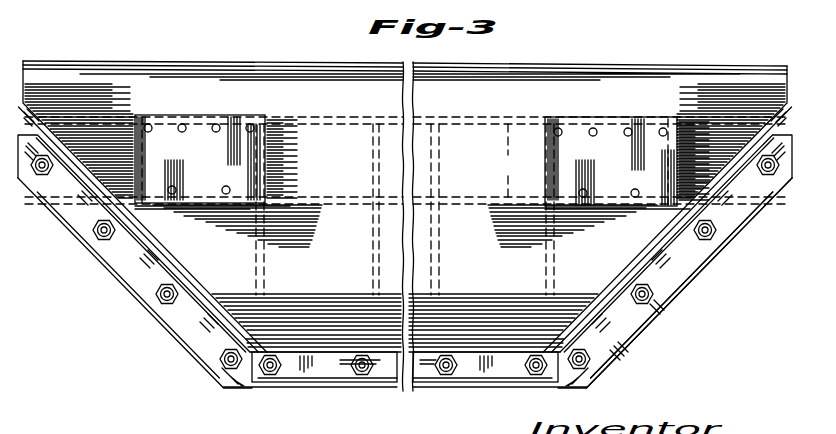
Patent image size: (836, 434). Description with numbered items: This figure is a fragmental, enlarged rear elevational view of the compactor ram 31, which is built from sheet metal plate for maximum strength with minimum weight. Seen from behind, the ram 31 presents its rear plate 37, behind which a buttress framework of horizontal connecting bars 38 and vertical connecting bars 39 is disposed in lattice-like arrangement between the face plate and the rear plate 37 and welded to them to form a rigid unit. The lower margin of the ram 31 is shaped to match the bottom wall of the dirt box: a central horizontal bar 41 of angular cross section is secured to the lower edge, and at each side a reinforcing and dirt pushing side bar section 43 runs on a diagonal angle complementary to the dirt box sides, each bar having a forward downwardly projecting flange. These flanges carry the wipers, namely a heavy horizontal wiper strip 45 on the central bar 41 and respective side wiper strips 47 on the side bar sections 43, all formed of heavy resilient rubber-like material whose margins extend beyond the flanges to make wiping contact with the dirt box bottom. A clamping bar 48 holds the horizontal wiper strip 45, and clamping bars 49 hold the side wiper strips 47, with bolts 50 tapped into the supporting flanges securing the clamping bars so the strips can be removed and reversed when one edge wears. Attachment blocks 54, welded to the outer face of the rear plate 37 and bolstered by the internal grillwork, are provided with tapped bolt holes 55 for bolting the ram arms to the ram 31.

The ram 31 is at (733, 46).
The rear plate 37 is at (505, 105).
The horizontal connecting bars 38 is at (510, 160).
The vertical connecting bars 39 is at (435, 180).
The central horizontal bar 41 is at (487, 340).
The side bar section 43 is at (200, 283).
The horizontal wiper strip 45 is at (360, 384).
The side wiper strips 47 is at (198, 348).
The clamping bar 48 is at (503, 368).
The clamping bars 49 is at (657, 276).
The bolts 50 is at (106, 240).
The attachment blocks 54 is at (197, 136).
The bolt holes 55 is at (151, 131).